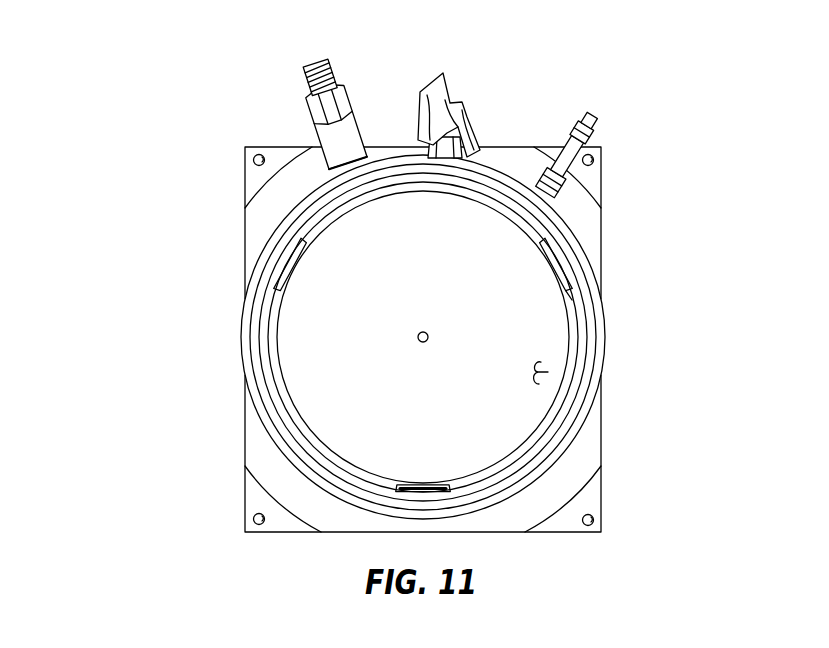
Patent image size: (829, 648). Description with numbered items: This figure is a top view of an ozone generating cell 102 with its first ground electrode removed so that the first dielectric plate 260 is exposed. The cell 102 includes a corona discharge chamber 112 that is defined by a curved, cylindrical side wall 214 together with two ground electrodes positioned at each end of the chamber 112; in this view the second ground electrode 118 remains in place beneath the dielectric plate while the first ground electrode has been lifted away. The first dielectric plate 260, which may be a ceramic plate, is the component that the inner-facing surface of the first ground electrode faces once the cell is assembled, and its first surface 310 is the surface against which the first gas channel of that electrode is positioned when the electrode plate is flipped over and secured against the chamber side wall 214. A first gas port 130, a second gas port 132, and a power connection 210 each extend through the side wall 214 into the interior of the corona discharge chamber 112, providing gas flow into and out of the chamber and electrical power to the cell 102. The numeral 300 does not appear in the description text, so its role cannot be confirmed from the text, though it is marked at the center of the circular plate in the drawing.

The ozone generating cell 102 is at (418, 315).
The corona discharge chamber 112 is at (541, 493).
The second ground electrode 118 is at (593, 492).
The first gas port 130 is at (337, 120).
The second gas port 132 is at (467, 112).
The power connection 210 is at (593, 118).
The curved side wall 214 is at (283, 450).
The first dielectric plate 260 is at (568, 302).
The center axis 300 is at (419, 334).
The first surface of the first dielectric plate 310 is at (548, 372).